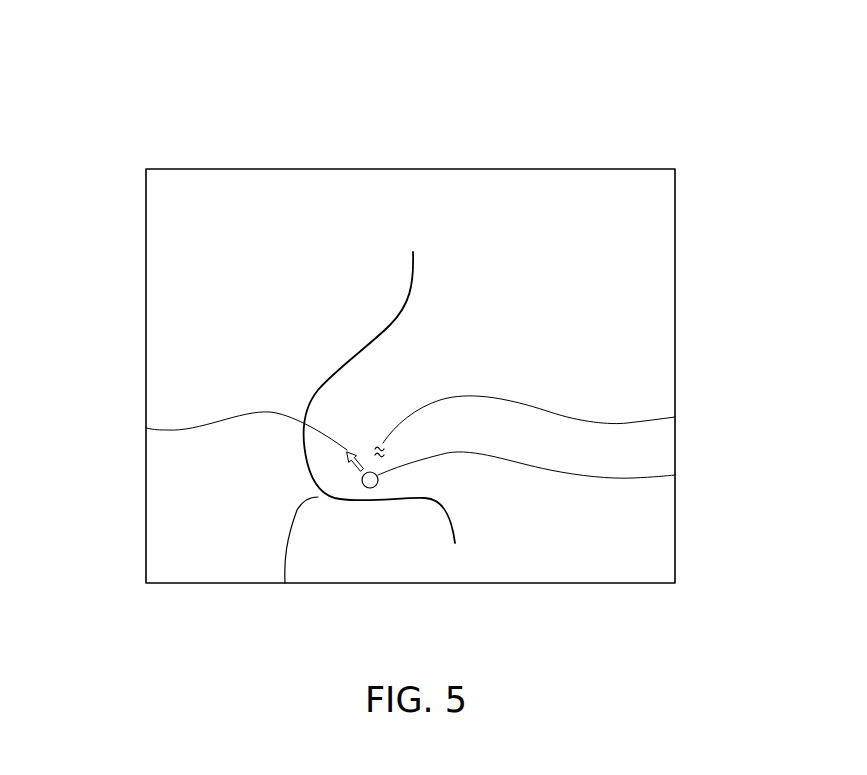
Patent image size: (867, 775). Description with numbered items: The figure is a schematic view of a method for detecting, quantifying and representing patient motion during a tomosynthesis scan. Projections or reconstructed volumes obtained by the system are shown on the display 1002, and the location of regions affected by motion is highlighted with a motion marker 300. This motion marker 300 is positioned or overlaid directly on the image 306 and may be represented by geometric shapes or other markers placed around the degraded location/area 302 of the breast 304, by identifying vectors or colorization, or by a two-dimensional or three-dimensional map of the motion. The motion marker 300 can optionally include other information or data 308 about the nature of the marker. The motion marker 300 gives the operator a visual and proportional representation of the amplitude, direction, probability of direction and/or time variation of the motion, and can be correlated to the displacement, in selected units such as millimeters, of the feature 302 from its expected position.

The display 1002 is at (183, 150).
The motion marker 300 is at (146, 428).
The degraded location/area 302 is at (675, 475).
The breast 304 is at (285, 583).
The image 306 is at (328, 187).
The information or data 308 is at (675, 417).